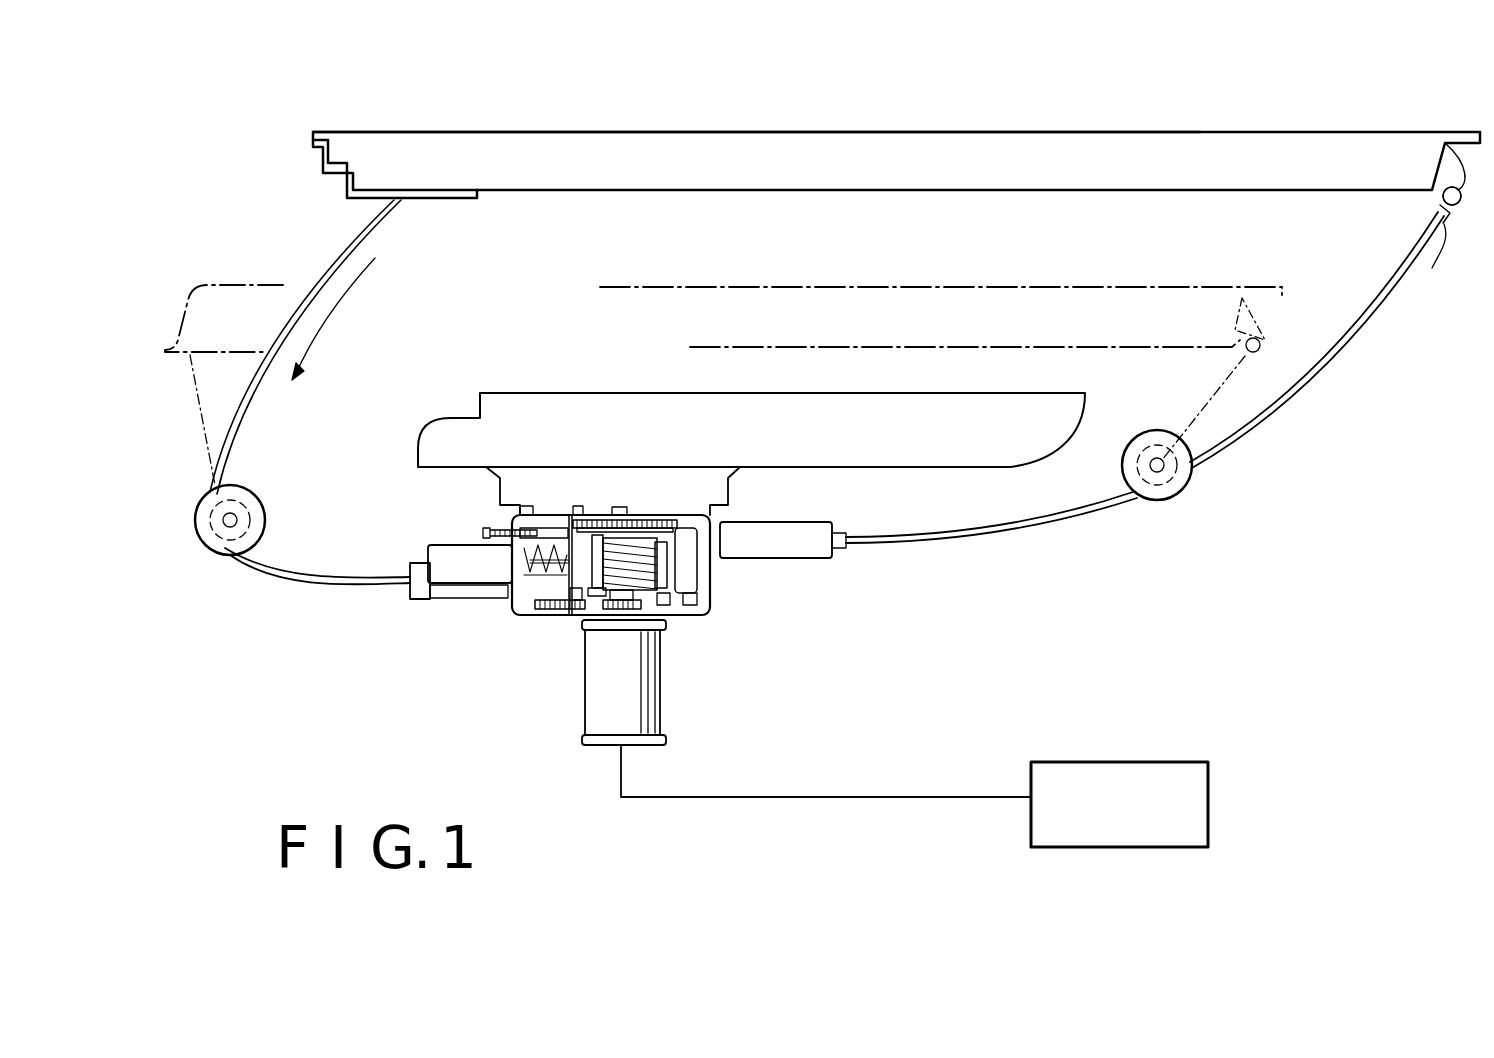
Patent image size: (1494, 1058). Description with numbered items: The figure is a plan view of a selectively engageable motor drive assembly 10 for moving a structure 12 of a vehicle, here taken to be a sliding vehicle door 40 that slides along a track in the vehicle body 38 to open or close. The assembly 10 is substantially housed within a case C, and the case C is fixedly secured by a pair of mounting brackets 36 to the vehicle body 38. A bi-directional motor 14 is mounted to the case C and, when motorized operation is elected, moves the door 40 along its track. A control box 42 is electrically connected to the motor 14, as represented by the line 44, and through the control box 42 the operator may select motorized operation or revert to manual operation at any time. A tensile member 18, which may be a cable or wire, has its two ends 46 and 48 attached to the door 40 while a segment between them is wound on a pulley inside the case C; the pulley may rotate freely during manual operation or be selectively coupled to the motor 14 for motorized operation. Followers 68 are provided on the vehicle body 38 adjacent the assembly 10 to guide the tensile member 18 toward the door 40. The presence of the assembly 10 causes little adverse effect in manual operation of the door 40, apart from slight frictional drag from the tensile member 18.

The selectively engageable motor drive assembly 10 is at (487, 618).
The structure 12 is at (880, 131).
The bi-directional motor 14 is at (592, 710).
The tensile member 18 is at (1280, 410).
The mounting brackets 36 is at (498, 487).
The vehicle body 38 is at (520, 393).
The sliding vehicle door 40 is at (737, 132).
The control box 42 is at (1095, 762).
The line 44 is at (740, 798).
The end of tensile member 46 is at (1438, 248).
The end of tensile member 48 is at (370, 198).
The followers 68 is at (232, 552).
The case C is at (705, 612).